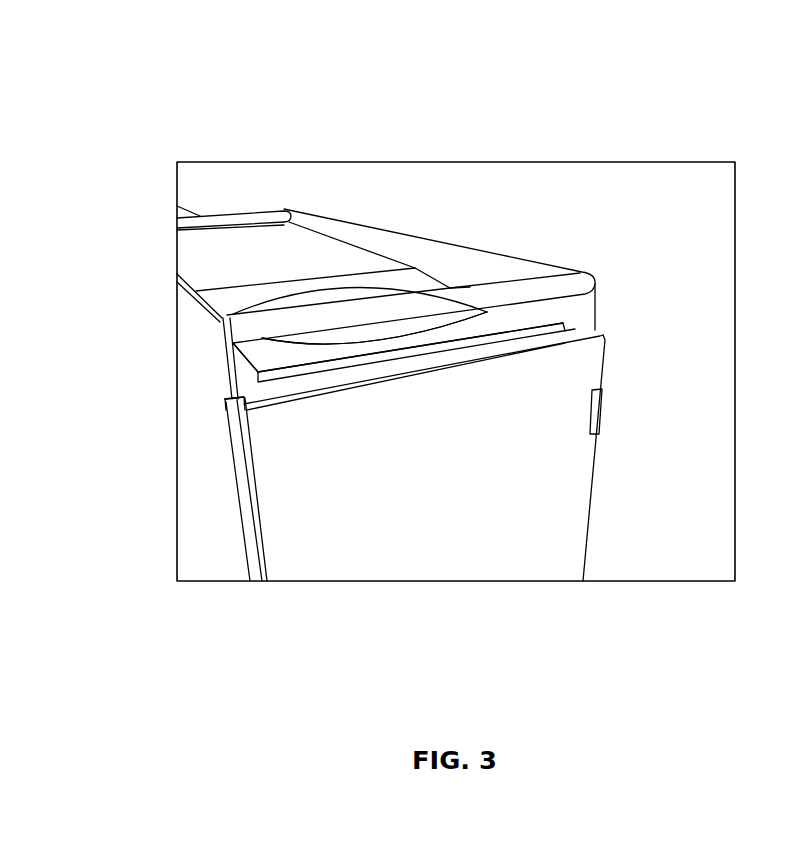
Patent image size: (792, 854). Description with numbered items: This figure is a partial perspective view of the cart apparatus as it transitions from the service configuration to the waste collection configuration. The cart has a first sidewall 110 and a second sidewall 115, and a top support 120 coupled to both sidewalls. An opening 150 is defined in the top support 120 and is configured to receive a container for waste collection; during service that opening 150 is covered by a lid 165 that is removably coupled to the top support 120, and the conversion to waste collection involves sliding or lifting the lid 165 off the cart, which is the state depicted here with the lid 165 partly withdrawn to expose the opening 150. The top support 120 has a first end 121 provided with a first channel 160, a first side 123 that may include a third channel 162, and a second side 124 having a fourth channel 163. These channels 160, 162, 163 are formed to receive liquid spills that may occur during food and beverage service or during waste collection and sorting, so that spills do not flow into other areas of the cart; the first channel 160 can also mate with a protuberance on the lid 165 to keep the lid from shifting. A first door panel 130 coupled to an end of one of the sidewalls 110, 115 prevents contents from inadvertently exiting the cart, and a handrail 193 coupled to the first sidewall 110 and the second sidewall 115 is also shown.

The first sidewall 110 is at (197, 508).
The second sidewall 115 is at (422, 243).
The top support 120 is at (224, 302).
The first end of the top support 121 is at (487, 347).
The first channel 160 is at (374, 328).
The first side of the top support 123 is at (240, 381).
The third channel 162 is at (234, 398).
The second side of the top support 124 is at (573, 334).
The fourth channel 163 is at (398, 347).
The first door panel 130 is at (550, 424).
The opening 150 is at (348, 347).
The lid 165 is at (323, 260).
The handrail 193 is at (205, 222).